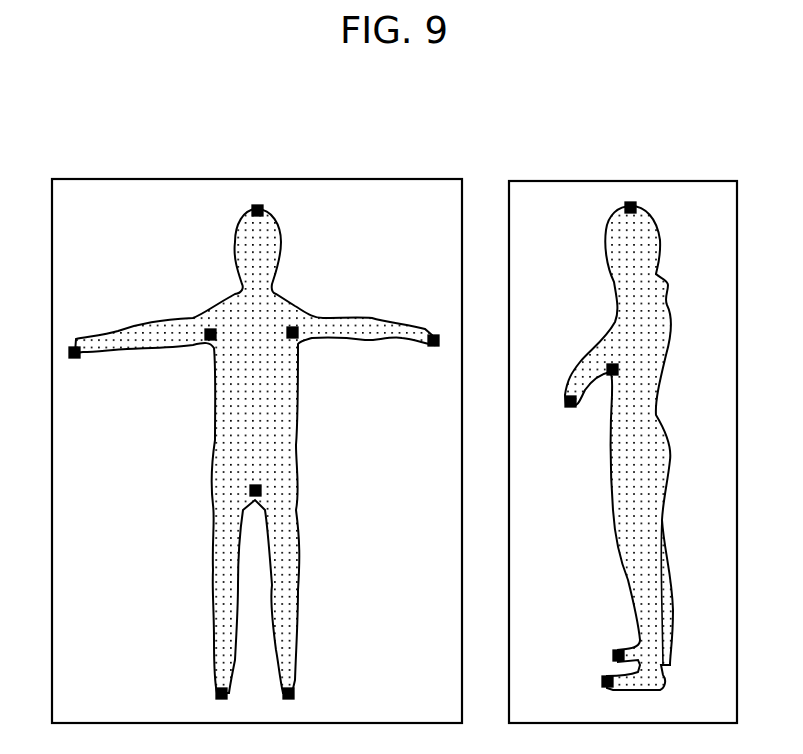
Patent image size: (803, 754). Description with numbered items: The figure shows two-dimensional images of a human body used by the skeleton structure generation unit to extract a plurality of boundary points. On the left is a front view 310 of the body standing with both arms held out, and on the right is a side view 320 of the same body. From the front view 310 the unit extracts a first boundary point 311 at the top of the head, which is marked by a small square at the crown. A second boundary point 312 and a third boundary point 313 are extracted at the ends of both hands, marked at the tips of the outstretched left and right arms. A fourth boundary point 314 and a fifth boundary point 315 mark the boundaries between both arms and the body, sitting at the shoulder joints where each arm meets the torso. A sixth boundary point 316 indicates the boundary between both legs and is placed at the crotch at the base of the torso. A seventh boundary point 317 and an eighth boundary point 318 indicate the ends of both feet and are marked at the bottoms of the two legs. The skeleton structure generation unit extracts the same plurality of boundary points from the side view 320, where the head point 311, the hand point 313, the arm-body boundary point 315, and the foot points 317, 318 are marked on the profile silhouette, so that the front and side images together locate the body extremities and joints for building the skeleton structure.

The front view 310 is at (260, 179).
The side view 320 is at (615, 181).
The first boundary point 311 is at (264, 207).
The second boundary point 312 is at (76, 359).
The third boundary point 313 is at (434, 347).
The fourth boundary point 314 is at (211, 330).
The fifth boundary point 315 is at (295, 328).
The sixth boundary point 316 is at (261, 489).
The seventh boundary point 317 is at (217, 690).
The eighth boundary point 318 is at (293, 690).